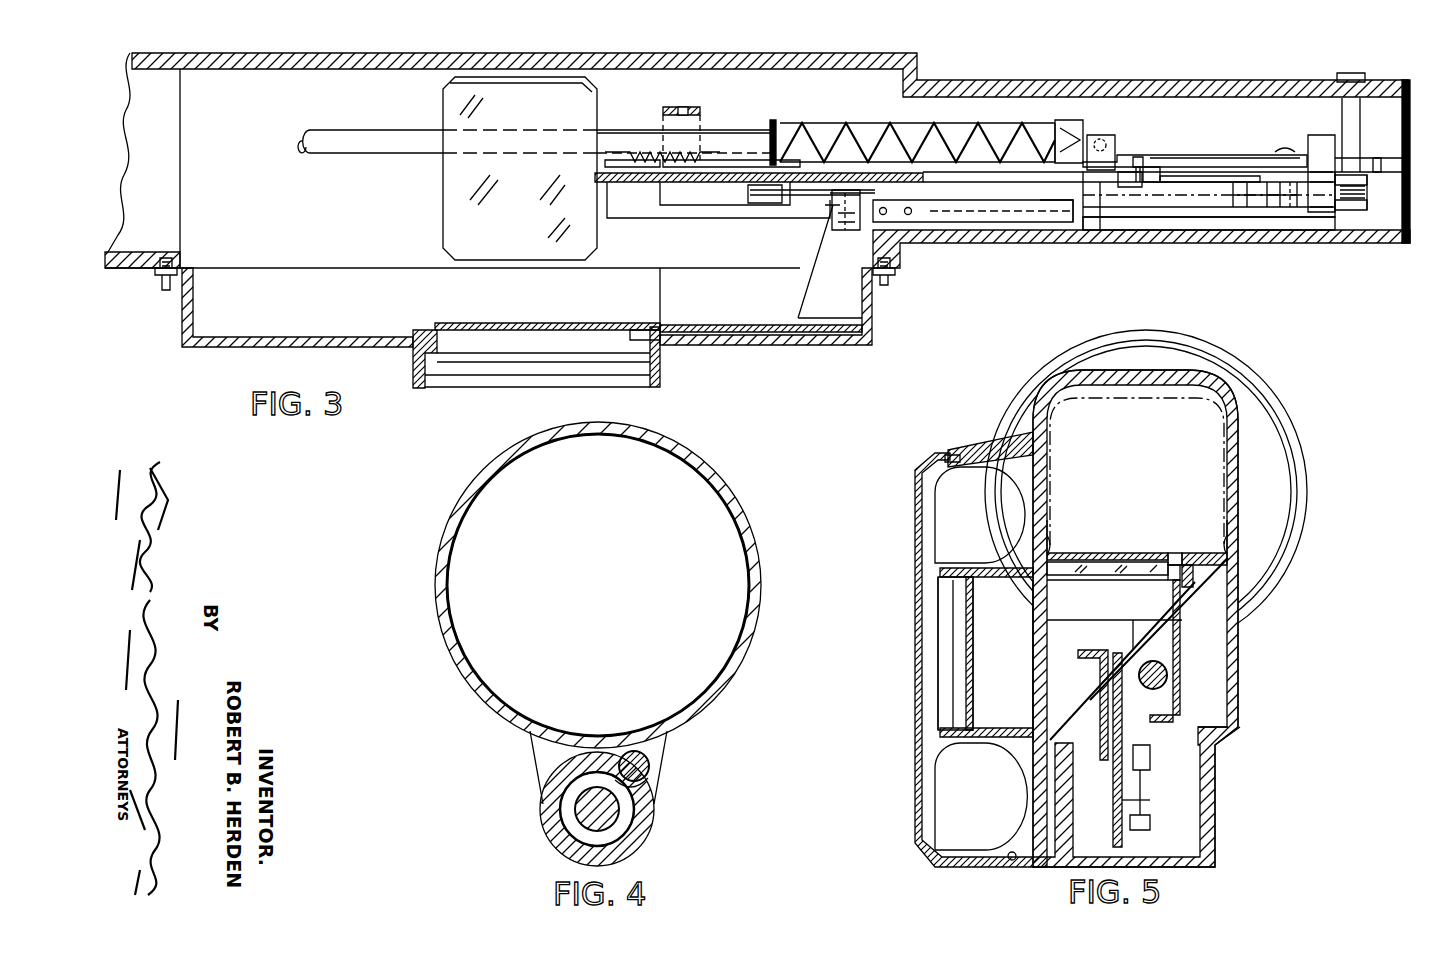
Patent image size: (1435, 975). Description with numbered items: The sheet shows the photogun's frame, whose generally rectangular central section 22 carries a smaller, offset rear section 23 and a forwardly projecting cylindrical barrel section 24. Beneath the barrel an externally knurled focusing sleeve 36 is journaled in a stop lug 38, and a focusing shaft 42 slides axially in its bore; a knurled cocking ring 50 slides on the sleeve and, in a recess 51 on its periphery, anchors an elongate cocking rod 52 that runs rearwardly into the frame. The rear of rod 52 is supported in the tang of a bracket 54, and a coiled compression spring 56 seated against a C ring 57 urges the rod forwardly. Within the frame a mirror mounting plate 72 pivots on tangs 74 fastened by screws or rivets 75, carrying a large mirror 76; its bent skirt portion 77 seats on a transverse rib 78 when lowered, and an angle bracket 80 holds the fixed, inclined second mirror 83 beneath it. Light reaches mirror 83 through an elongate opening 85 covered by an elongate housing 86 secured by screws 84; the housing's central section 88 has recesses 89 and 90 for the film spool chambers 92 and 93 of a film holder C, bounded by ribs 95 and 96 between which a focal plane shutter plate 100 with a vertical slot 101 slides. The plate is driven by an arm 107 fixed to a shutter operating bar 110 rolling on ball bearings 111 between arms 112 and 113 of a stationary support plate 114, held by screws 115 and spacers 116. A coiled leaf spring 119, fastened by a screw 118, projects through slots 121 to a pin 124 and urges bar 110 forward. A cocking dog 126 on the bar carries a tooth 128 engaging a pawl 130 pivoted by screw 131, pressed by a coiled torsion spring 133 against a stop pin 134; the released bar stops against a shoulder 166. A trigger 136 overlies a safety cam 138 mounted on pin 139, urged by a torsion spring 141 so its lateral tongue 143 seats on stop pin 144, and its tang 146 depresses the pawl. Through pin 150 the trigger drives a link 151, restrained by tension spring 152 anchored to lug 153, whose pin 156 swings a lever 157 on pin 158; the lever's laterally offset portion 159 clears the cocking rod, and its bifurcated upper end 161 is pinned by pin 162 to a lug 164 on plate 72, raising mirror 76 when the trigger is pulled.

In FIG. 3, the central section 22 is at (615, 58).
In FIG. 3, the rear section 23 is at (1008, 95).
In FIG. 3, the cocking rod 52 is at (350, 132).
In FIG. 4, the cocking rod 52 is at (648, 768).
In FIG. 5, the cocking rod 52 is at (1170, 675).
In FIG. 3, the second mirror 83 is at (525, 232).
In FIG. 5, the second mirror 83 is at (1200, 598).
In FIG. 3, the lever 157 is at (700, 132).
In FIG. 5, the lever 157 is at (1182, 698).
In FIG. 3, the C ring 57 is at (780, 118).
In FIG. 3, the coiled compression spring 56 is at (858, 126).
In FIG. 3, the stationary lug 153 is at (630, 170).
In FIG. 3, the tension spring 152 is at (655, 195).
In FIG. 3, the arm 113 is at (680, 222).
In FIG. 5, the arm 113 is at (1088, 715).
In FIG. 3, the slots 121 is at (718, 210).
In FIG. 3, the screw 118 is at (760, 208).
In FIG. 3, the coiled leaf spring 119 is at (790, 200).
In FIG. 3, the pin 124 is at (830, 200).
In FIG. 3, the ball bearings 111 is at (895, 215).
In FIG. 3, the arm 107 is at (806, 296).
In FIG. 3, the elongate opening 85 is at (180, 258).
In FIG. 3, the screws 84 is at (168, 285).
In FIG. 3, the elongate housing 86 is at (245, 346).
In FIG. 3, the central section 88 is at (412, 360).
In FIG. 5, the central section 88 is at (960, 452).
In FIG. 3, the focal plane shutter plate 100 is at (524, 322).
In FIG. 5, the focal plane shutter plate 100 is at (978, 643).
In FIG. 3, the vertical slot 101 is at (642, 320).
In FIG. 3, the bracket 54 is at (1075, 118).
In FIG. 3, the lateral tongue 143 is at (1100, 138).
In FIG. 3, the stop pin 144 is at (1113, 152).
In FIG. 3, the safety cam 138 is at (1160, 165).
In FIG. 3, the link 151 is at (1210, 155).
In FIG. 5, the link 151 is at (1150, 808).
In FIG. 3, the pin 150 is at (1283, 150).
In FIG. 3, the cocking dog 126 is at (1310, 133).
In FIG. 3, the screws 115 is at (1340, 73).
In FIG. 3, the spacers 116 is at (1358, 125).
In FIG. 3, the trigger 136 is at (1368, 165).
In FIG. 3, the stop pin 134 is at (1232, 192).
In FIG. 3, the arm 112 is at (1033, 222).
In FIG. 5, the arm 112 is at (1075, 655).
In FIG. 3, the shoulder 166 is at (1090, 222).
In FIG. 3, the support plate 114 is at (1108, 220).
In FIG. 5, the support plate 114 is at (1110, 805).
In FIG. 3, the shutter operating bar 110 is at (1132, 230).
In FIG. 3, the pin 139 is at (1150, 185).
In FIG. 3, the torsion spring 141 is at (1180, 185).
In FIG. 3, the tang 146 is at (1270, 212).
In FIG. 3, the tooth 128 is at (1315, 215).
In FIG. 3, the screw 131 is at (1343, 220).
In FIG. 3, the pawl 130 is at (1365, 212).
In FIG. 3, the coiled torsion spring 133 is at (1368, 198).
In FIG. 4, the barrel section 24 is at (436, 572).
In FIG. 4, the stop lug 38 is at (534, 752).
In FIG. 4, the focusing sleeve 36 is at (640, 818).
In FIG. 4, the focusing shaft 42 is at (570, 800).
In FIG. 4, the cocking ring 50 is at (538, 822).
In FIG. 4, the recess 51 is at (645, 782).
In FIG. 5, the film holder C is at (913, 545).
In FIG. 5, the mirror 76 is at (1130, 400).
In FIG. 5, the mirror mounting plate 72 is at (1090, 555).
In FIG. 5, the skirt portion 77 is at (1080, 575).
In FIG. 5, the tangs 74 is at (1050, 535).
In FIG. 5, the screws or rivets 75 is at (1050, 550).
In FIG. 5, the lug 164 is at (1175, 552).
In FIG. 5, the pin 162 is at (1168, 578).
In FIG. 5, the bifurcated upper end 161 is at (1165, 590).
In FIG. 5, the angle bracket 80 is at (1133, 633).
In FIG. 5, the laterally offset portion 159 is at (1198, 745).
In FIG. 5, the pin 158 is at (1160, 765).
In FIG. 5, the pin 156 is at (1152, 825).
In FIG. 5, the recess 89 is at (972, 452).
In FIG. 5, the film spool chamber 92 is at (987, 532).
In FIG. 5, the rib 95 is at (978, 600).
In FIG. 5, the transverse rib 78 is at (1020, 600).
In FIG. 5, the rib 96 is at (998, 728).
In FIG. 5, the film spool chamber 93 is at (989, 809).
In FIG. 5, the recess 90 is at (1010, 862).